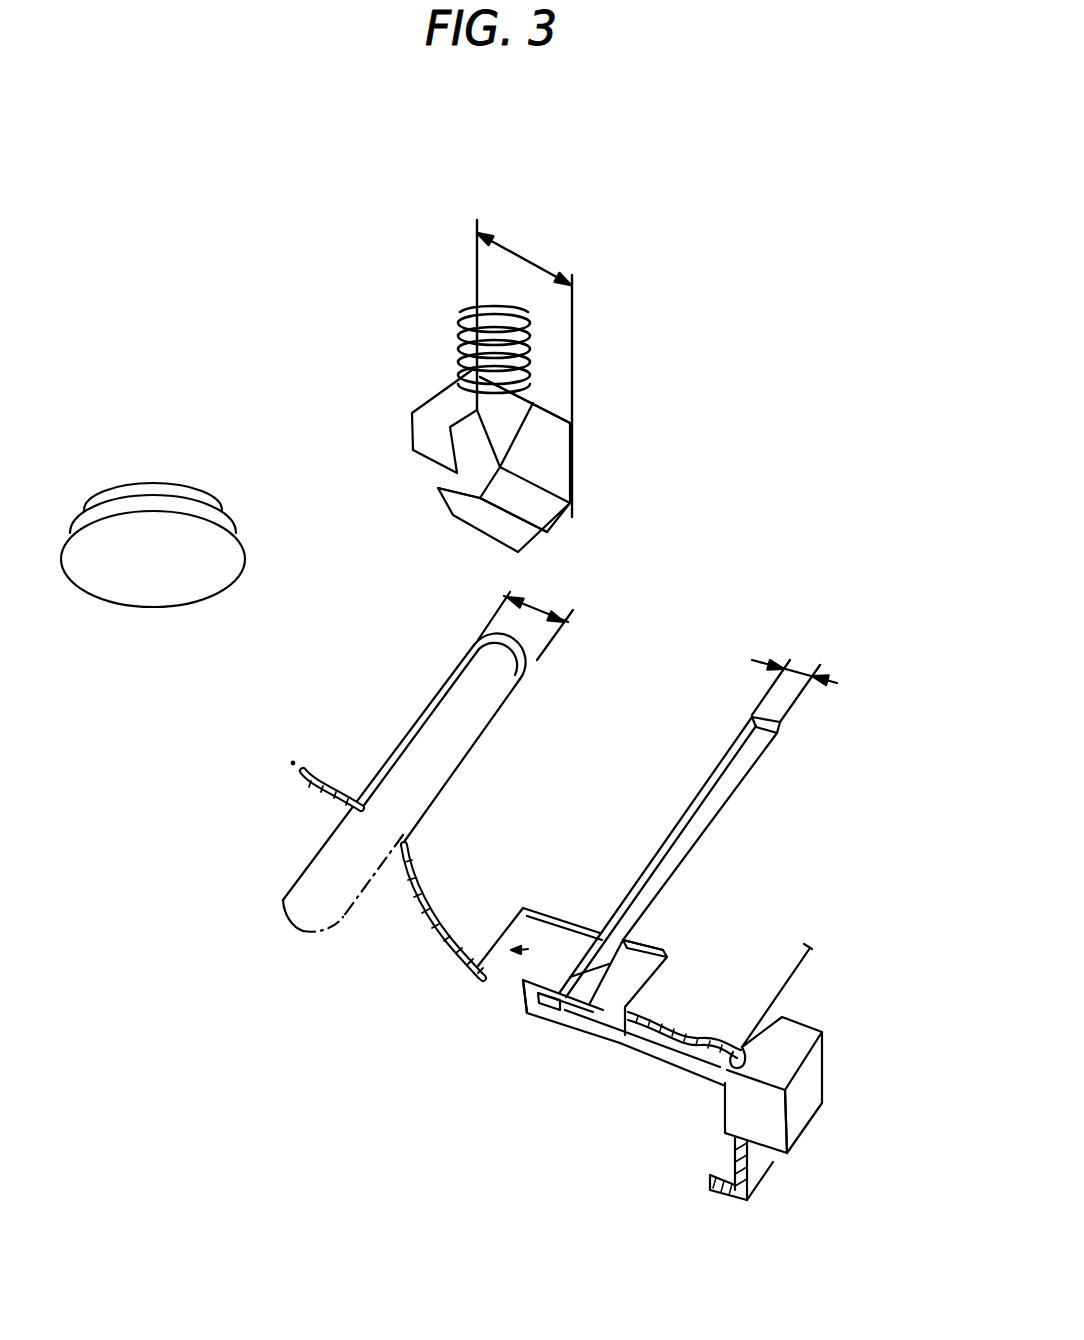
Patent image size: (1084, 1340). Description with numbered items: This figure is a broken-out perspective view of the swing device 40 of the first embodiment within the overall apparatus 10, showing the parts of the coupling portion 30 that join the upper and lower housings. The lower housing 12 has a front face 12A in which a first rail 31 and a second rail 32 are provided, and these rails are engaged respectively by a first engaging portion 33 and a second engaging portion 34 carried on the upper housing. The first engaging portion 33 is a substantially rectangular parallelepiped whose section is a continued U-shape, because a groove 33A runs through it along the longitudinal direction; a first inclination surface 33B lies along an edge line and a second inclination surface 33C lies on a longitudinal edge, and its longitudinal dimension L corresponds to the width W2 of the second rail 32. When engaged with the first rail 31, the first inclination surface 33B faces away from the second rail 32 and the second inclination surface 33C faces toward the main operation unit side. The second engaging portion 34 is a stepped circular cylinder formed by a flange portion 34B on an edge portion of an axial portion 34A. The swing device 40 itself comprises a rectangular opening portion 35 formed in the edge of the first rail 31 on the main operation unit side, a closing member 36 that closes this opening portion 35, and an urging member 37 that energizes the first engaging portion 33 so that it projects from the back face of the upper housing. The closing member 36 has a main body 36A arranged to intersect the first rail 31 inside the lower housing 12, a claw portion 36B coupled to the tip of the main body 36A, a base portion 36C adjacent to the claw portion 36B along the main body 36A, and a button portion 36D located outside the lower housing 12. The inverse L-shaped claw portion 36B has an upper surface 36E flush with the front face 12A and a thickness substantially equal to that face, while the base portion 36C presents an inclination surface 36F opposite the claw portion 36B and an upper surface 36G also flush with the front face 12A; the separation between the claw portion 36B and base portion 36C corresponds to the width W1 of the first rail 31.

The assembly 10 is at (778, 370).
The lower housing 12 is at (788, 983).
The front face of the lower housing 12A is at (463, 903).
The coupling portion 30 is at (817, 492).
The first rail 31 is at (712, 815).
The second rail 32 is at (425, 712).
The first engaging portion 33 is at (507, 447).
The groove 33A is at (430, 457).
The first inclination surface 33B is at (540, 507).
The second inclination surface 33C is at (533, 406).
The second engaging portion 34 is at (153, 463).
The axial portion 34A is at (98, 380).
The flange portion 34B is at (130, 535).
The opening portion 35 is at (493, 971).
The closing member 36 is at (673, 1072).
The main body 36A is at (680, 1022).
The claw portion 36B is at (521, 995).
The base portion 36C is at (609, 1021).
The button portion 36D is at (802, 1090).
The upper surface of the claw portion 36E is at (553, 953).
The inclination surface 36F is at (597, 1005).
The upper surface of the base portion 36G is at (668, 990).
The urging member 37 is at (466, 328).
The swing device 40 is at (400, 1215).